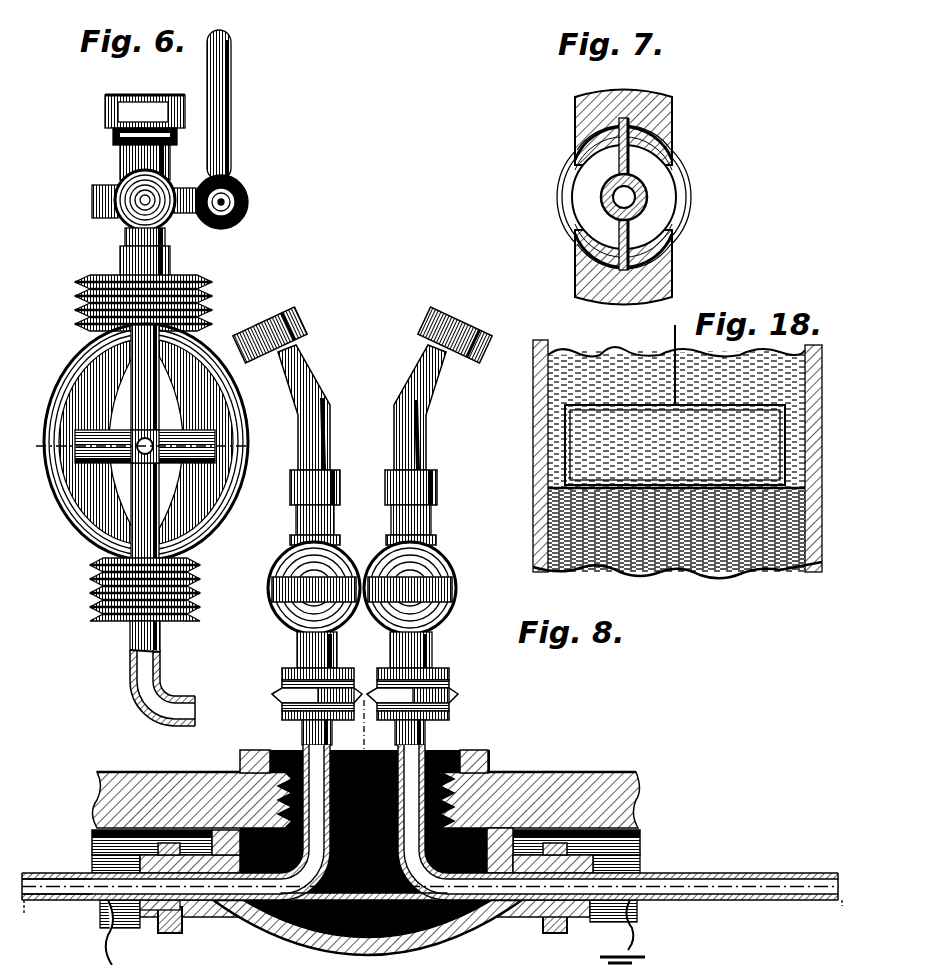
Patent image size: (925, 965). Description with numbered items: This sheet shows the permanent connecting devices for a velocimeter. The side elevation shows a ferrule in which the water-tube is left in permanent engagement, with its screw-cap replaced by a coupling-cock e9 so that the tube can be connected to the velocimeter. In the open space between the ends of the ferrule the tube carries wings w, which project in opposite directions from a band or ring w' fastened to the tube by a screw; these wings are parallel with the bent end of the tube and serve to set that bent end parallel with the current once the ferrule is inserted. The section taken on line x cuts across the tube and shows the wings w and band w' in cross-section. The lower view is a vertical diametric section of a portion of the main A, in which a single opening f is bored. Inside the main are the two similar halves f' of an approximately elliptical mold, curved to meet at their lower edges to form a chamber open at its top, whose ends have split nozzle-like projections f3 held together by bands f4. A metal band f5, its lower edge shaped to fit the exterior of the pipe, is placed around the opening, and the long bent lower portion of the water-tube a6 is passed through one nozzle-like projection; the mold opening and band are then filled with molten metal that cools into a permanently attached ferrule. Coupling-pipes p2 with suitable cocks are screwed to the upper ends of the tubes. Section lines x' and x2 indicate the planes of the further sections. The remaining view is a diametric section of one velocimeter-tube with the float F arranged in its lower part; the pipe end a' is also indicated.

In FIG. 6, the coupling-cock e9 is at (144, 191).
In FIG. 6, the wings w is at (145, 437).
In FIG. 7, the wings w is at (633, 194).
In FIG. 6, the band or ring w' is at (130, 467).
In FIG. 7, the band or ring w' is at (615, 197).
In FIG. 6, the section line x x is at (150, 439).
In FIG. 8, the coupling-pipes p2 is at (362, 526).
In FIG. 8, the section line x2 x2 is at (355, 726).
In FIG. 8, the opening f is at (366, 778).
In FIG. 8, the metal band f5 is at (492, 748).
In FIG. 8, the nozzle-like projections f3 is at (148, 918).
In FIG. 8, the bands f4 is at (178, 933).
In FIG. 8, the mold halves f' is at (367, 932).
In FIG. 8, the main A is at (366, 846).
In FIG. 8, the main pipe a' is at (430, 822).
In FIG. 8, the water-tube a6 is at (57, 899).
In FIG. 8, the section line x' x' is at (437, 912).
In FIG. 18, the float F is at (785, 425).